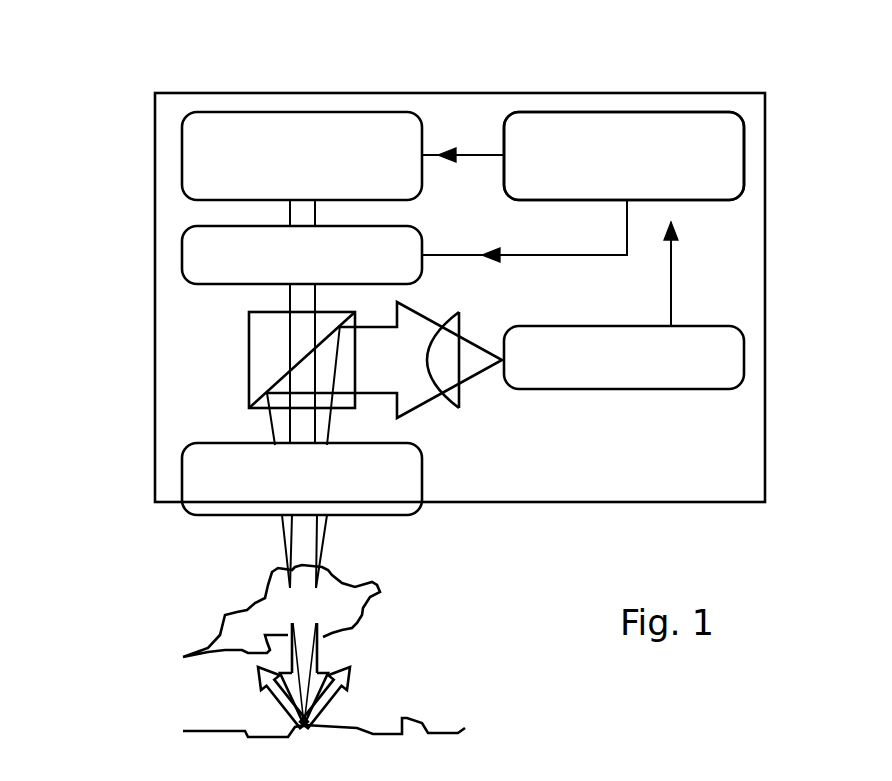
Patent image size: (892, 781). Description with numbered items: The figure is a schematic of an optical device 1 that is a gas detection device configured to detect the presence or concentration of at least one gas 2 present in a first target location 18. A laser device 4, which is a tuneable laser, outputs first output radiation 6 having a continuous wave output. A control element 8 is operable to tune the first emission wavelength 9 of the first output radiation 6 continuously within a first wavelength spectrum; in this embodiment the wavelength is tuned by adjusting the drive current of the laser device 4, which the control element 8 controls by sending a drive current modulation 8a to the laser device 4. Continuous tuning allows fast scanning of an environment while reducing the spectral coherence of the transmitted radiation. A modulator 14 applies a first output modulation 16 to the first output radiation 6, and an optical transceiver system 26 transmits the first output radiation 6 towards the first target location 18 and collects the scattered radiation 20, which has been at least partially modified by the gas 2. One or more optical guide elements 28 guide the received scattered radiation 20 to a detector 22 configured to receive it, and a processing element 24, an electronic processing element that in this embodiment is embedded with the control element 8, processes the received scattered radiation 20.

The optical device 1 is at (745, 55).
The gas 2 is at (398, 611).
The laser device 4 is at (302, 156).
The first output radiation 6 is at (315, 300).
The control element 8 is at (568, 65).
The drive current modulation 8a is at (476, 150).
The first emission wavelength 9 is at (290, 212).
The modulator 14 is at (302, 255).
The first output modulation 16 is at (148, 258).
The first target location 18 is at (193, 731).
The scattered radiation 20 is at (270, 422).
The detector 22 is at (624, 357).
The processing element 24 is at (800, 186).
The optical transceiver system 26 is at (302, 479).
The optical guide elements 28 is at (249, 337).